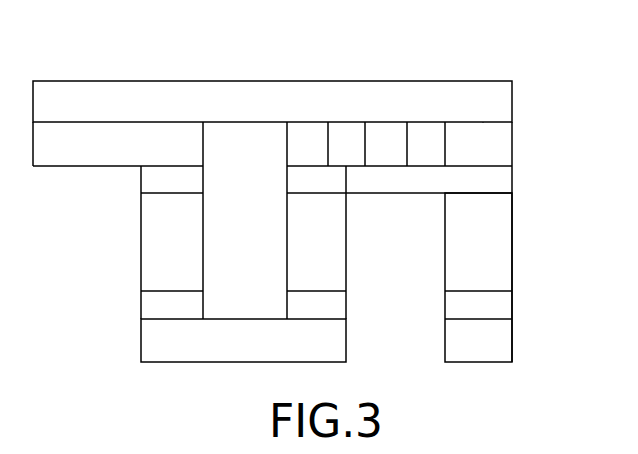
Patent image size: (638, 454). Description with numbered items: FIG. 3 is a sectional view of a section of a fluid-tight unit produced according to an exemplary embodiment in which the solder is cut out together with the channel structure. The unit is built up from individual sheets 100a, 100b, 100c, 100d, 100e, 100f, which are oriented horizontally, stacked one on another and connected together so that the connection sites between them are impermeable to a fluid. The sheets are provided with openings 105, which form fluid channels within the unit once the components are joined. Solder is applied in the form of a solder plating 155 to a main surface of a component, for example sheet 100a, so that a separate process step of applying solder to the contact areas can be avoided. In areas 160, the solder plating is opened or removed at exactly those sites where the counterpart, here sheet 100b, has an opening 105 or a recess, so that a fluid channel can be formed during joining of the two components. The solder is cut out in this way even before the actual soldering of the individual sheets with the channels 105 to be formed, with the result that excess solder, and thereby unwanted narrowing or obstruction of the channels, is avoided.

The sheet 100a is at (109, 113).
The sheet 100b is at (109, 156).
The sheet 100c is at (492, 182).
The sheet 100d is at (501, 249).
The sheet 100e is at (497, 303).
The sheet 100f is at (259, 353).
The opening 105 is at (264, 229).
The solder plating 155 is at (483, 122).
The area 160 is at (285, 119).